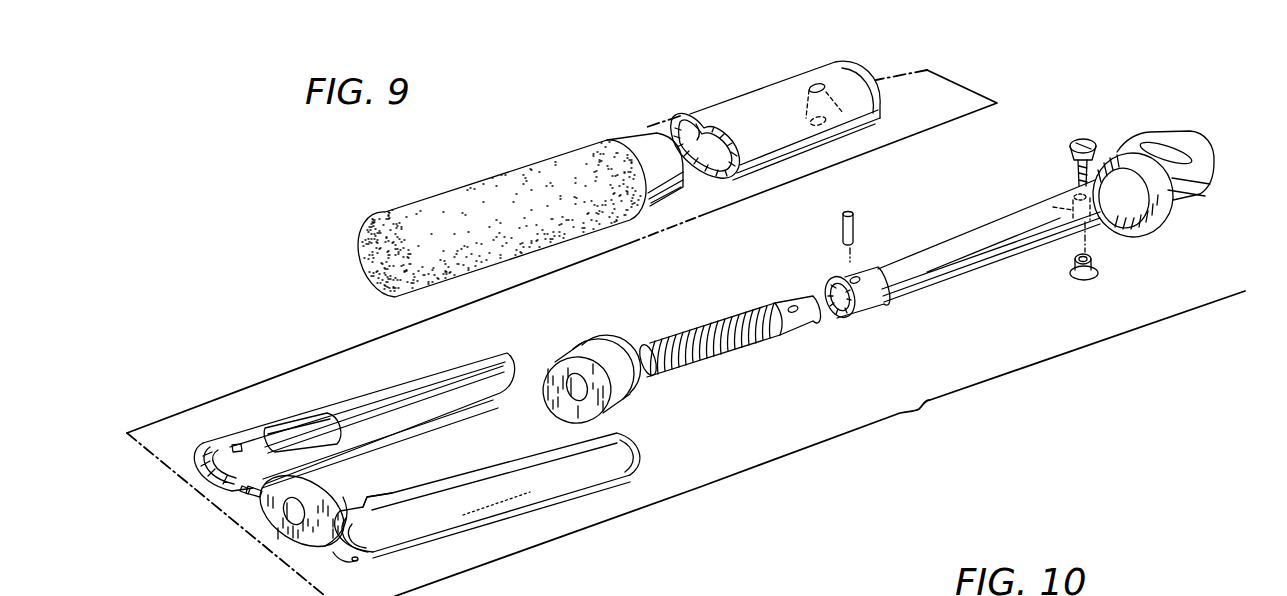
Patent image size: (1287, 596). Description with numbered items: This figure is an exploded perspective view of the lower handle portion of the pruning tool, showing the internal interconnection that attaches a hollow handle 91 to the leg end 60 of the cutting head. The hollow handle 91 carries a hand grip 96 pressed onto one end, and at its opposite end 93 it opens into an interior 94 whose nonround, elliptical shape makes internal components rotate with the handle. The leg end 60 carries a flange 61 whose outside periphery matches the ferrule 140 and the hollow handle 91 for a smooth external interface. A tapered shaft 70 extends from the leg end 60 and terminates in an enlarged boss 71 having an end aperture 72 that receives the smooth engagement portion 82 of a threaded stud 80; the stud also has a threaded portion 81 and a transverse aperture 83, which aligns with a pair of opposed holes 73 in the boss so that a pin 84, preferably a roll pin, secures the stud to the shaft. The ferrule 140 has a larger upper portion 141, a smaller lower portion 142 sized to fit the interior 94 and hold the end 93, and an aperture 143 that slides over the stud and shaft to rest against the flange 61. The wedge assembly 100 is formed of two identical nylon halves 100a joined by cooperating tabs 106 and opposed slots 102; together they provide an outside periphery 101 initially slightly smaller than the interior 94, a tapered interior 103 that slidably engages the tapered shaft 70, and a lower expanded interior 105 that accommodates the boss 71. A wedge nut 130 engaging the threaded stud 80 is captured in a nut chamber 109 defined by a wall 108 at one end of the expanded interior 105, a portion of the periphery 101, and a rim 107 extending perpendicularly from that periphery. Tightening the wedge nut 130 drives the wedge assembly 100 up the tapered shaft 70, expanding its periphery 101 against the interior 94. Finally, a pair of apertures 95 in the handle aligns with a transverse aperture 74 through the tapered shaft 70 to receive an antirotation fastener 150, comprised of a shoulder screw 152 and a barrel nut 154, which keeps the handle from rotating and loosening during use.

The leg end 60 is at (1138, 150).
The flange 61 is at (1163, 237).
The tapered shaft 70 is at (988, 235).
The enlarged boss 71 is at (875, 303).
The end aperture 72 is at (835, 306).
The opposed holes 73 is at (859, 276).
The transverse aperture 74 is at (1052, 203).
The threaded stud 80 is at (722, 314).
The threaded portion 81 is at (733, 345).
The smooth engagement portion 82 is at (795, 326).
The transverse aperture 83 is at (795, 303).
The pin 84 is at (855, 224).
The hollow handle 91 is at (740, 110).
The end 93 is at (863, 88).
The interior 94 is at (695, 126).
The apertures 95 is at (806, 116).
The hand grip 96 is at (469, 190).
The wedge assembly 100 is at (545, 520).
The half 100a is at (484, 356).
The outside periphery 101 is at (372, 395).
The slots 102 is at (327, 457).
The tapered interior 103 is at (430, 390).
The lower expanded interior 105 is at (316, 420).
The tabs 106 is at (375, 497).
The rim 107 is at (202, 450).
The wall 108 is at (239, 444).
The nut chamber 109 is at (242, 494).
The wedge nut 130 is at (280, 533).
The ferrule 140 is at (580, 338).
The upper portion 141 is at (616, 352).
The lower portion 142 is at (568, 345).
The aperture 143 is at (573, 398).
The antirotation fastener 150 is at (1093, 139).
The shoulder screw 152 is at (1076, 158).
The barrel nut 154 is at (1068, 270).